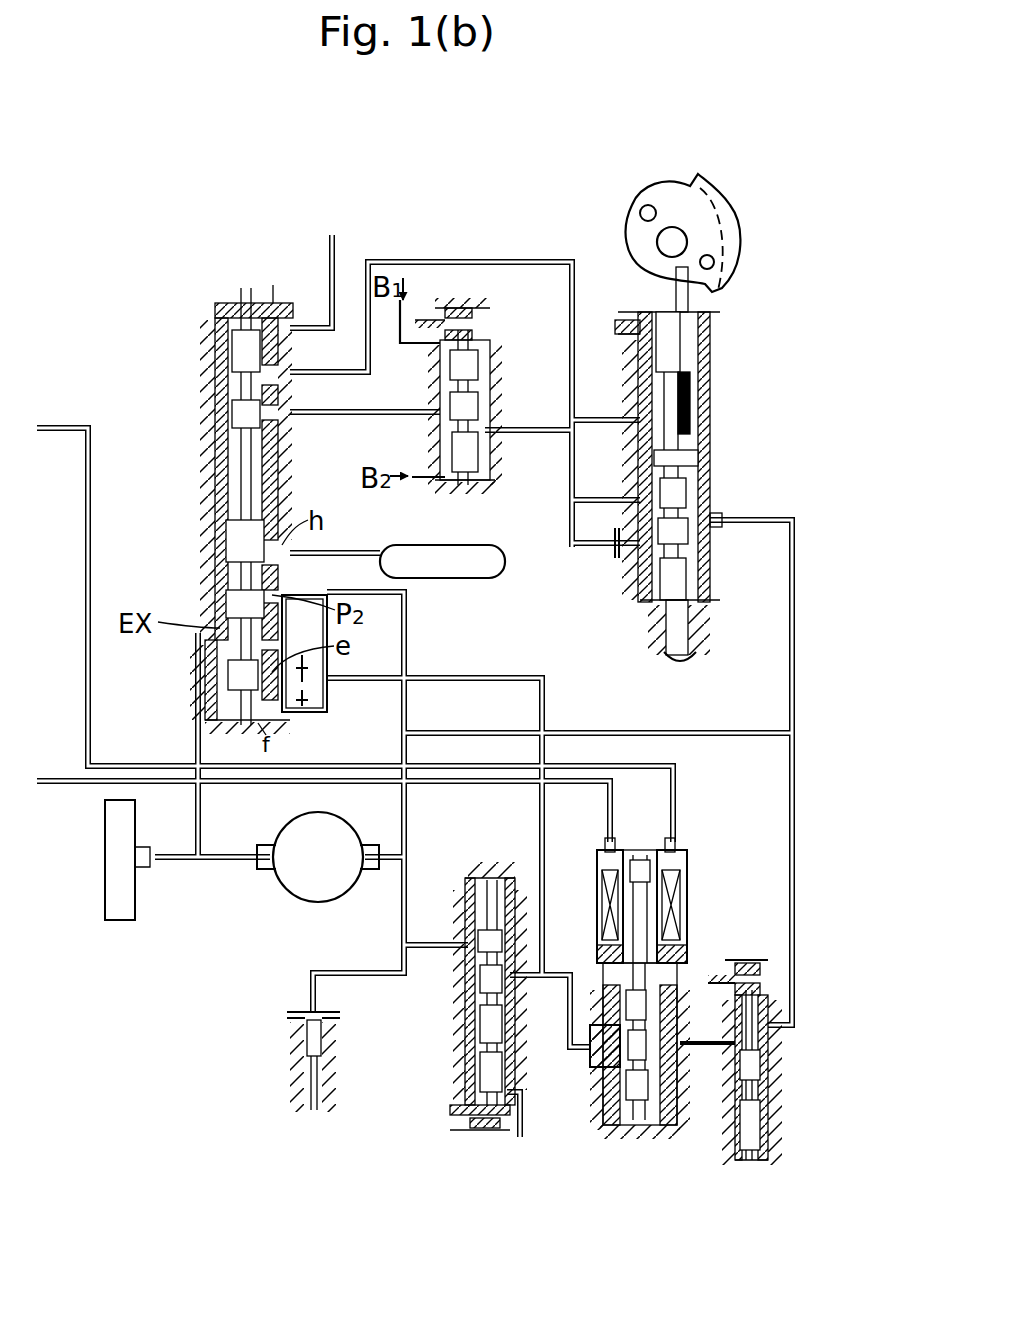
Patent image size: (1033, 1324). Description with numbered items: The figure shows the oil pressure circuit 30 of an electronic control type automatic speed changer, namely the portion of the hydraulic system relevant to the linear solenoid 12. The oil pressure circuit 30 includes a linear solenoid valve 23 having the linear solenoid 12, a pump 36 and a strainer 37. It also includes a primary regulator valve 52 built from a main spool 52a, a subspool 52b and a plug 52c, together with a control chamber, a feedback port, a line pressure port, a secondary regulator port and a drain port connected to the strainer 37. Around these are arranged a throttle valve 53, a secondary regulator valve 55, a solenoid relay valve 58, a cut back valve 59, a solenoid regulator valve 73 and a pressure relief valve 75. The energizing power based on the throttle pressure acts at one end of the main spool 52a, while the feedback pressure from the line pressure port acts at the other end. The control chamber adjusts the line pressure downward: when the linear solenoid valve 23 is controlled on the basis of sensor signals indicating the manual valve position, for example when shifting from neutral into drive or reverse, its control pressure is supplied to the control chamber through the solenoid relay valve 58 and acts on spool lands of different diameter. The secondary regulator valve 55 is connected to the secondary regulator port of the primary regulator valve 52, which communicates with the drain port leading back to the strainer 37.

The oil pressure circuit 30 is at (588, 178).
The primary regulator valve 52 is at (223, 480).
The main spool 52a is at (228, 585).
The subspool 52b is at (232, 414).
The plug 52c is at (232, 365).
The throttle valve 53 is at (720, 315).
The secondary regulator valve 55 is at (463, 545).
The cut back valve 59 is at (487, 316).
The solenoid relay valve 58 is at (480, 868).
The linear solenoid valve 23 is at (692, 855).
The linear solenoid 12 is at (690, 880).
The solenoid regulator valve 73 is at (743, 958).
The pressure relief valve 75 is at (298, 1005).
The pump 36 is at (290, 880).
The strainer 37 is at (123, 920).